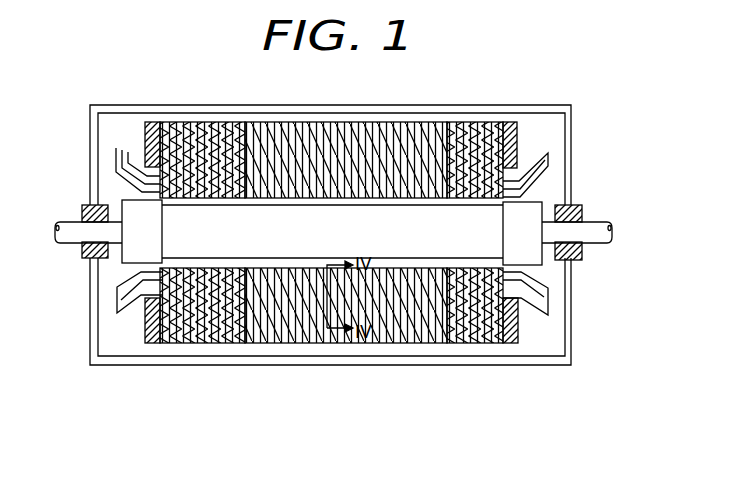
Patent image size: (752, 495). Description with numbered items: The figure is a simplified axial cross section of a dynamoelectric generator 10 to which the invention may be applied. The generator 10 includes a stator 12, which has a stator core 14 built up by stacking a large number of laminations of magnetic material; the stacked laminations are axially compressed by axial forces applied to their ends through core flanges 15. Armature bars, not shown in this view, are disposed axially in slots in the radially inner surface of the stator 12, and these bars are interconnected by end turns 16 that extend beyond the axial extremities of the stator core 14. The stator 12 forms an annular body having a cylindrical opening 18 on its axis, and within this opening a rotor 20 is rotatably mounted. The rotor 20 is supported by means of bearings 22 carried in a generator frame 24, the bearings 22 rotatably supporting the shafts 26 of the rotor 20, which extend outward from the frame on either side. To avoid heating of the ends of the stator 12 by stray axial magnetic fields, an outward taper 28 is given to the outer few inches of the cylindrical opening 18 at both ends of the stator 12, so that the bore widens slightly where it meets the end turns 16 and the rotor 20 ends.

The dynamoelectric generator 10 is at (177, 375).
The stator 12 is at (435, 118).
The stator core 14 is at (230, 120).
The core flanges 15 is at (520, 140).
The end turns 16 is at (122, 153).
The cylindrical opening 18 is at (485, 202).
The rotor 20 is at (487, 241).
The bearings 22 is at (85, 204).
The generator frame 24 is at (418, 366).
The shafts 26 is at (593, 221).
The outward taper 28 is at (130, 275).